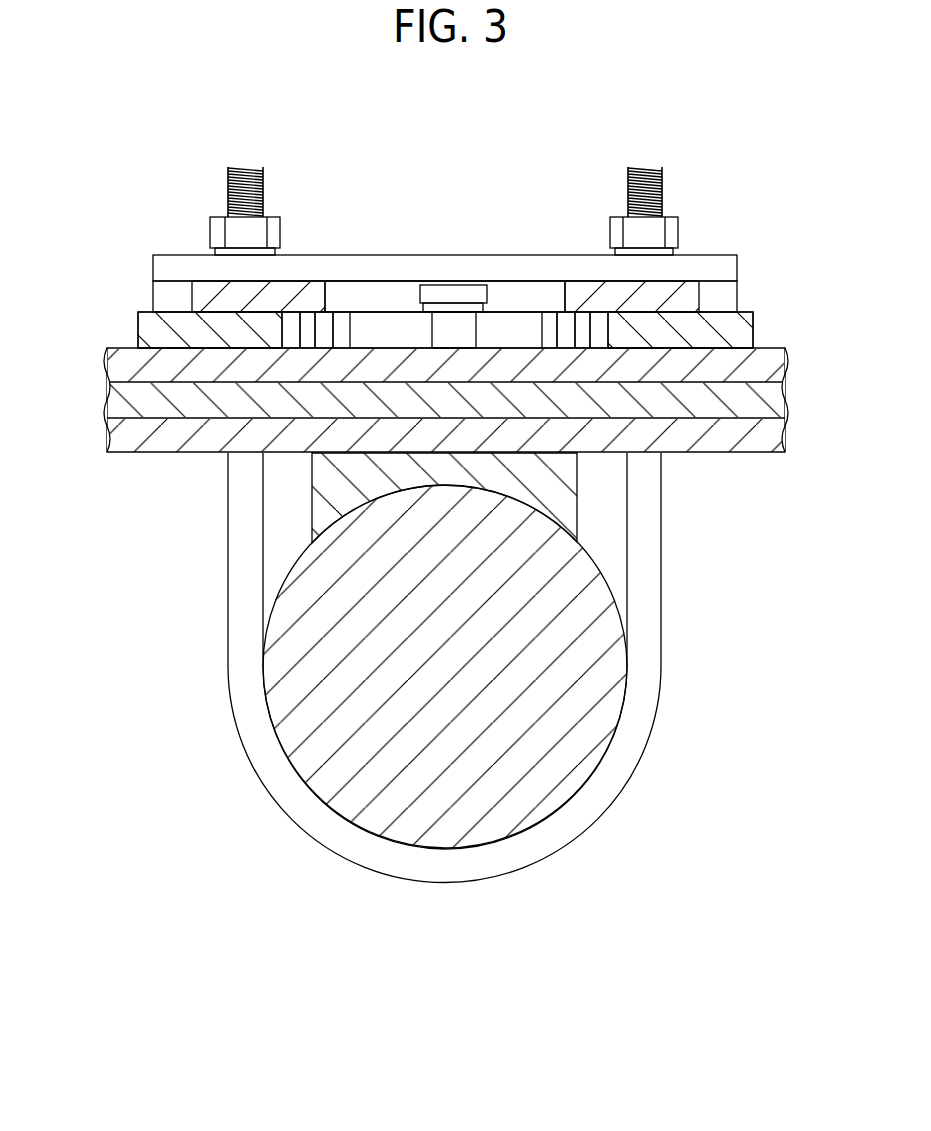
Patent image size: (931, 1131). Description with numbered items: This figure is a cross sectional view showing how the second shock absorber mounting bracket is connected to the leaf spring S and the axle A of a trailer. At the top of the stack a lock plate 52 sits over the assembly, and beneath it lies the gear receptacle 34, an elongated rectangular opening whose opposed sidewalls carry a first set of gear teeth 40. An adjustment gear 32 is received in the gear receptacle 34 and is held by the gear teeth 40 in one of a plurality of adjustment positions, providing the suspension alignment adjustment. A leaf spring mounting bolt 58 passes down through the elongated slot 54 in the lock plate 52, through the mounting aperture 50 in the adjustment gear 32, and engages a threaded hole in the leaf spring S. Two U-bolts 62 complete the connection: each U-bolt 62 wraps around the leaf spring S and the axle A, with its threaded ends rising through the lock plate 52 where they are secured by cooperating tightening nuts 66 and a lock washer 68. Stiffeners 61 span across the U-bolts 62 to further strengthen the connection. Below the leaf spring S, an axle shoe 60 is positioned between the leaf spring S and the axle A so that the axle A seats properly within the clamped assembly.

The U-bolts 62 is at (240, 165).
The tightening nuts 66 is at (273, 227).
The lock washer 68 is at (273, 253).
The stiffeners 61 is at (165, 267).
The lock plate 52 is at (160, 295).
The gear receptacle 34 is at (282, 332).
The first set of gear teeth 40 is at (583, 333).
The adjustment gear 32 is at (368, 340).
The mounting aperture 50 is at (430, 333).
The leaf spring mounting bolt 58 is at (443, 292).
The elongated slot 54 is at (518, 300).
The axle shoe 60 is at (547, 485).
The axle A is at (600, 670).
The leaf spring S is at (775, 402).